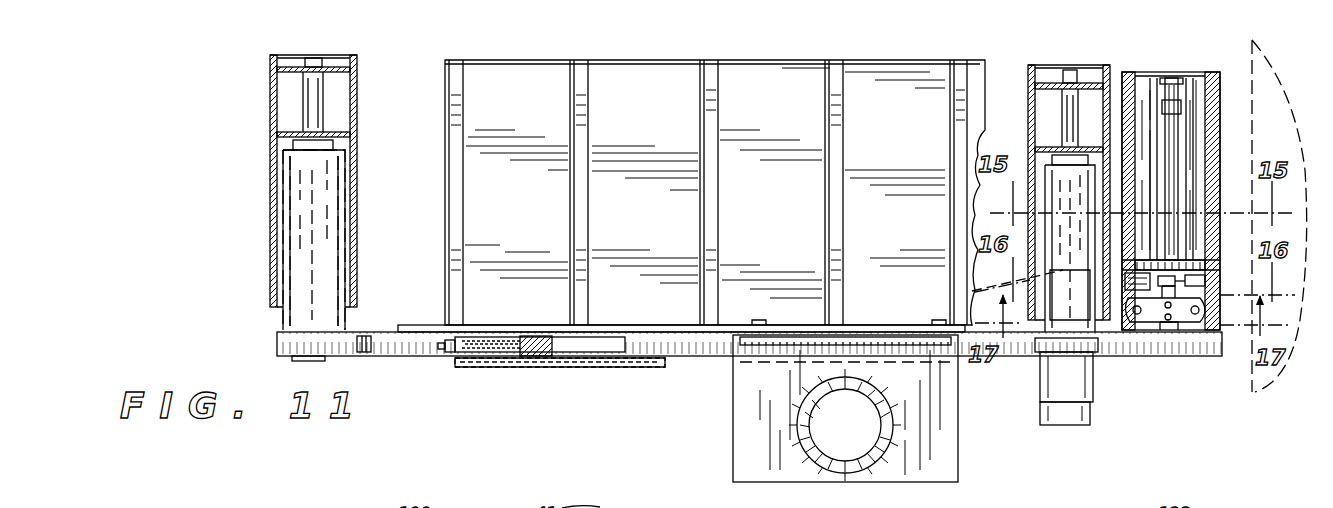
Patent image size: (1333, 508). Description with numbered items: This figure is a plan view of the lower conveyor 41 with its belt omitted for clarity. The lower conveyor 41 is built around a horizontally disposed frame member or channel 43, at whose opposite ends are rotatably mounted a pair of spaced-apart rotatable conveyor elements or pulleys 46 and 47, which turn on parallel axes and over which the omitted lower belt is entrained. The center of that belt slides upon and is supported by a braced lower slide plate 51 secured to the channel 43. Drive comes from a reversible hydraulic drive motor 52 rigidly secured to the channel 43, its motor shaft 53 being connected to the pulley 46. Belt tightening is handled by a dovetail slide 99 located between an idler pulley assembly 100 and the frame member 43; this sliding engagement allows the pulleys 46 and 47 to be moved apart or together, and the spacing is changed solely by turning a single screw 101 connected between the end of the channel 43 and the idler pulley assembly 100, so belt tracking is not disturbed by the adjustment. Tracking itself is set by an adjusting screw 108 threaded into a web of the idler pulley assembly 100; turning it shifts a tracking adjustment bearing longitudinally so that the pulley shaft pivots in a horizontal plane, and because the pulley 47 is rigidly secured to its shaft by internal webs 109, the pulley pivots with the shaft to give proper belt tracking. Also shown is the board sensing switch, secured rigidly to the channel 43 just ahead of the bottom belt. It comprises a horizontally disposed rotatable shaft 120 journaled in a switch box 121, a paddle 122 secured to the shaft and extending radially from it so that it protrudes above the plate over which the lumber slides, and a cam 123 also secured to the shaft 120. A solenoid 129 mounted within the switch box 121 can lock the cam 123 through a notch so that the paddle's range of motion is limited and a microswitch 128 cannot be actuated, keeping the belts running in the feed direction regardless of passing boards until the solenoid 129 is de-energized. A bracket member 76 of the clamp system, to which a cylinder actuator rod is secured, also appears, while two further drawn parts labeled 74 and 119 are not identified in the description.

The lower conveyor member 41 is at (668, 367).
The frame member or channel 43 is at (740, 358).
The pulley 46 is at (1028, 80).
The pulley 47 is at (270, 210).
The lower slide plate 51 is at (782, 124).
The reversible hydraulic drive motor 52 is at (1070, 425).
The motor shaft 53 is at (945, 292).
The bore 74 is at (866, 468).
The bracket member 76 is at (945, 466).
The dovetail slide 99 is at (525, 362).
The idler pulley assembly 100 is at (425, 360).
The screw 101 is at (452, 360).
The adjusting screw 108 is at (370, 356).
The internal webs 109 is at (300, 133).
The frame 119 is at (1218, 88).
The rotatable shaft 120 is at (1190, 80).
The switch box 121 is at (1210, 120).
The paddle 122 is at (1170, 105).
The cam 123 is at (1165, 336).
The microswitch 128 is at (1210, 280).
The solenoid 129 is at (1148, 326).